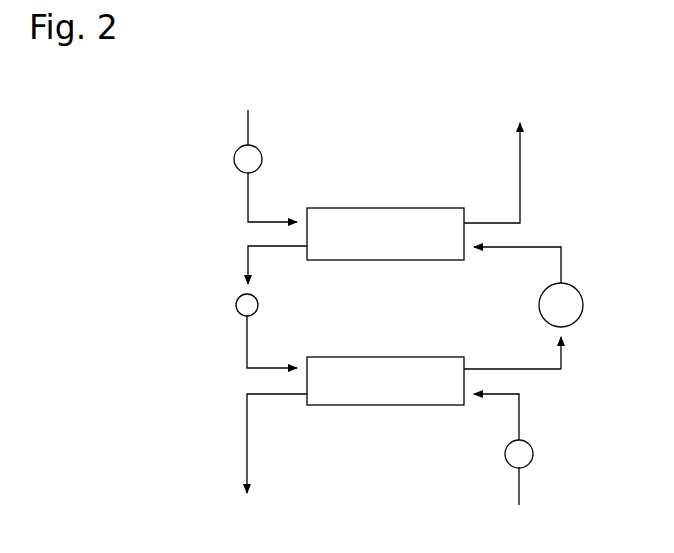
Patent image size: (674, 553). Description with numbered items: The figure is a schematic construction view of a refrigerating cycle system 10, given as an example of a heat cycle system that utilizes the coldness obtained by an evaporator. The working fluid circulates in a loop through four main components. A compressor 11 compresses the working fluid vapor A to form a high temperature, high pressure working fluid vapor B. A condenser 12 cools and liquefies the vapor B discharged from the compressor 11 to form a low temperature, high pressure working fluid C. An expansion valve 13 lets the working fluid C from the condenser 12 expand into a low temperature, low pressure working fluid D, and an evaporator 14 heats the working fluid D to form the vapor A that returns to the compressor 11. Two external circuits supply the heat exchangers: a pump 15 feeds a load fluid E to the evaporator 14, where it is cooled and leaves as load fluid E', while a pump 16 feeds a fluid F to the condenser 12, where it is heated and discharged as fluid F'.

The refrigerating cycle system 10 is at (365, 152).
The compressor 11 is at (583, 305).
The condenser 12 is at (403, 207).
The expansion valve 13 is at (236, 306).
The evaporator 14 is at (403, 356).
The pump 15 is at (533, 455).
The pump 16 is at (234, 161).